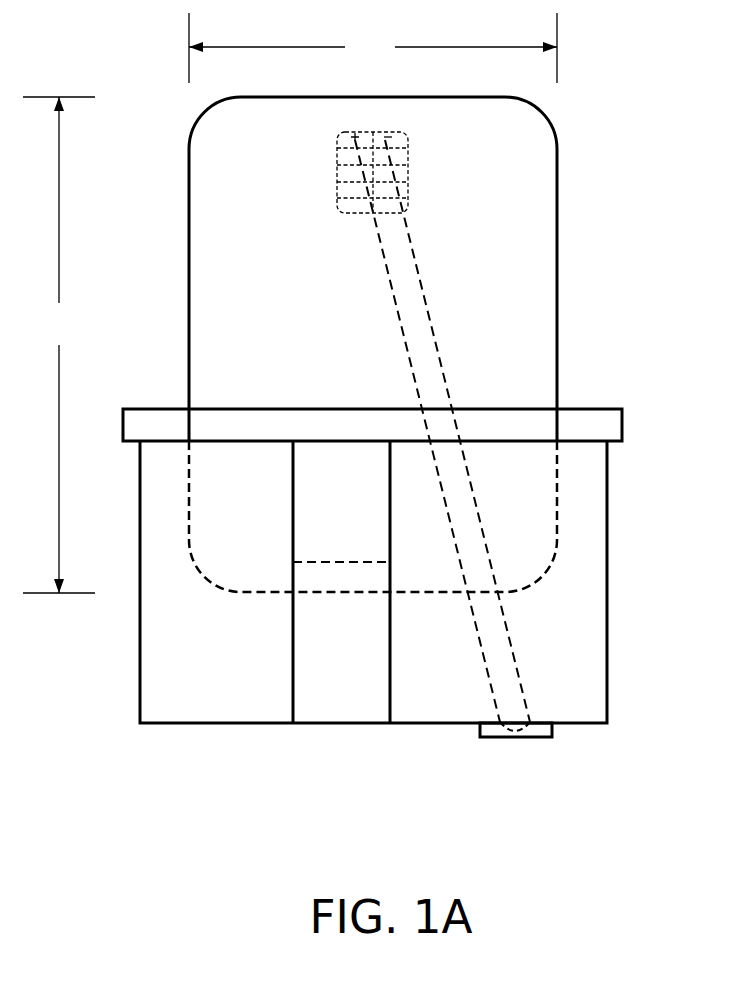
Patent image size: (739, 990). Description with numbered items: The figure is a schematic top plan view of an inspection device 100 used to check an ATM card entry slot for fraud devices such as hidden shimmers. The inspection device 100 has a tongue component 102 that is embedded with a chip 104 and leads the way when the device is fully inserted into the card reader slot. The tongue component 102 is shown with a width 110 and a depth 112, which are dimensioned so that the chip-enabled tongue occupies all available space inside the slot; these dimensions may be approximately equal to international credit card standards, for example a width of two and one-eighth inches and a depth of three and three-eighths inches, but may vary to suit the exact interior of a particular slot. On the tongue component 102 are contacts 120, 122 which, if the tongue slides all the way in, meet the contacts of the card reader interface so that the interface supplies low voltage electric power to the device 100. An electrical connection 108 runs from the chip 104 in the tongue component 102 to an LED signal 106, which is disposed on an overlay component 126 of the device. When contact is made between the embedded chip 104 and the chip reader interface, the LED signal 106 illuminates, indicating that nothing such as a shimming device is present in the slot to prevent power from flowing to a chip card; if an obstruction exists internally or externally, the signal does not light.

The inspection device 100 is at (628, 306).
The tongue component 102 is at (512, 284).
The chip 104 is at (410, 157).
The LED signal 106 is at (524, 738).
The electrical connection 108 is at (440, 220).
The width 110 is at (373, 48).
The depth 112 is at (59, 345).
The contact 120 is at (338, 142).
The contact 122 is at (388, 132).
The overlay component 126 is at (602, 409).